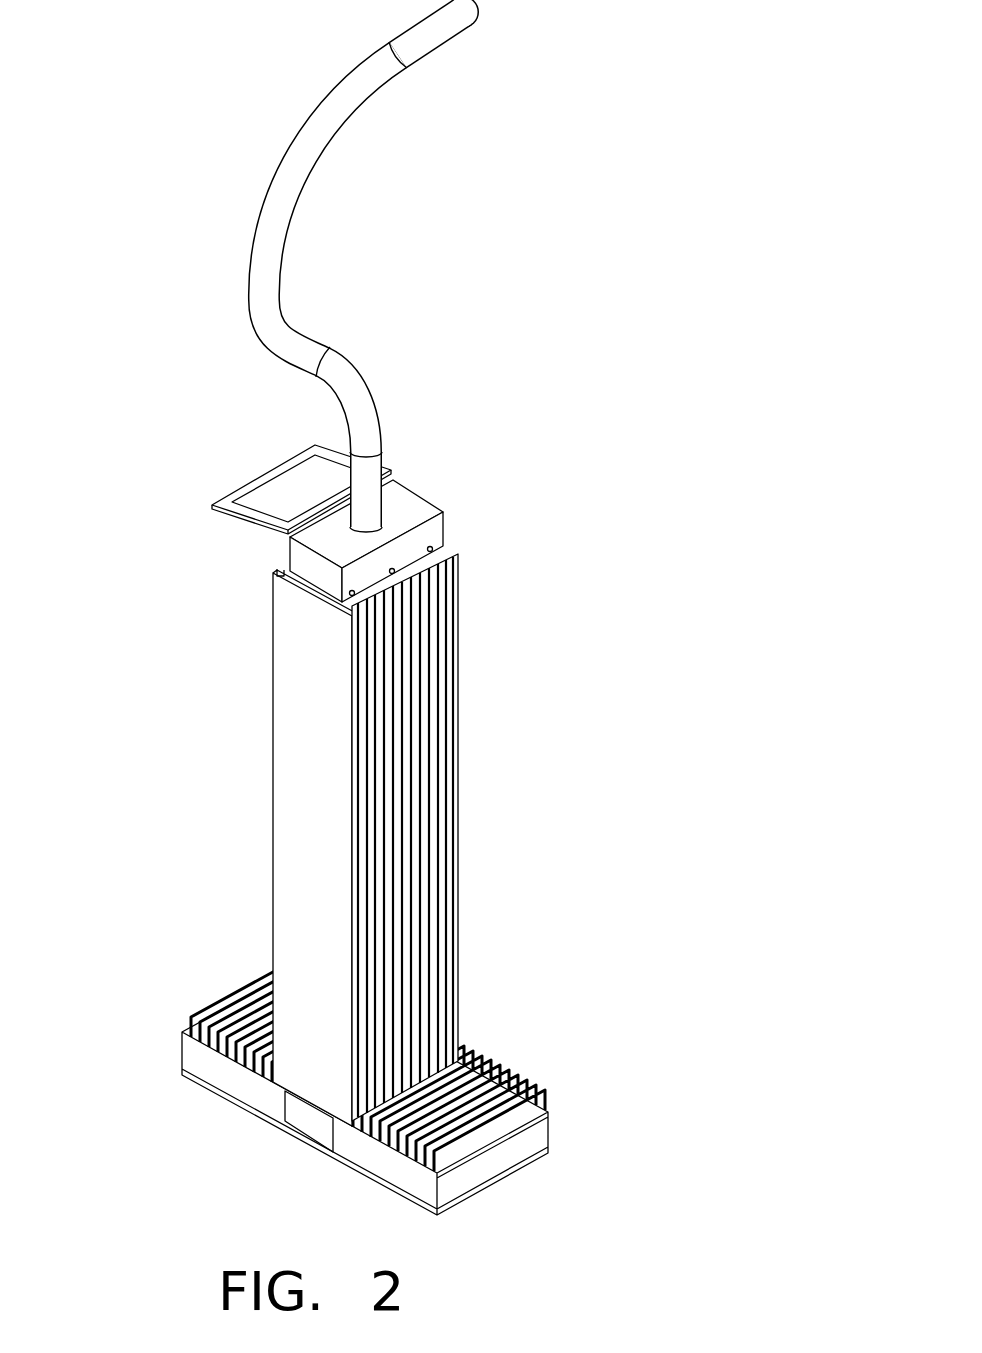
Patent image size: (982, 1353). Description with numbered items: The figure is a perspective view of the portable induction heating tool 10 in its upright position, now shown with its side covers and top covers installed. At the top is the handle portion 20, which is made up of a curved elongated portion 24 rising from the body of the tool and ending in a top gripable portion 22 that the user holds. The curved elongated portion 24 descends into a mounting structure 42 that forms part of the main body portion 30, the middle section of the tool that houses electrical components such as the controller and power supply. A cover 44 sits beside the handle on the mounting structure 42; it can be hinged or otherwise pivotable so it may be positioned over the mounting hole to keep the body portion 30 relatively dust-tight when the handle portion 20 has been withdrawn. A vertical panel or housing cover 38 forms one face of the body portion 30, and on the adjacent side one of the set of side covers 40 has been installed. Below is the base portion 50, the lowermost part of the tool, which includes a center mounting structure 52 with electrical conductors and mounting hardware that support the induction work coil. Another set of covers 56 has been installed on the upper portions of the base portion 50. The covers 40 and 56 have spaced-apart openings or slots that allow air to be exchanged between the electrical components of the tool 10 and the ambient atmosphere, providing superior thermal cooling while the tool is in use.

The induction heating tool 10 is at (717, 212).
The handle portion 20 is at (320, 266).
The top gripable portion 22 is at (447, 42).
The curved elongated portion 24 is at (290, 218).
The main body portion 30 is at (329, 776).
The vertical panel or housing cover 38 is at (332, 766).
The side cover 40 is at (433, 643).
The mounting structure 42 is at (422, 502).
The cover 44 is at (288, 482).
The base portion 50 is at (354, 1082).
The center mounting structure 52 is at (317, 1117).
The covers 56 is at (522, 1092).